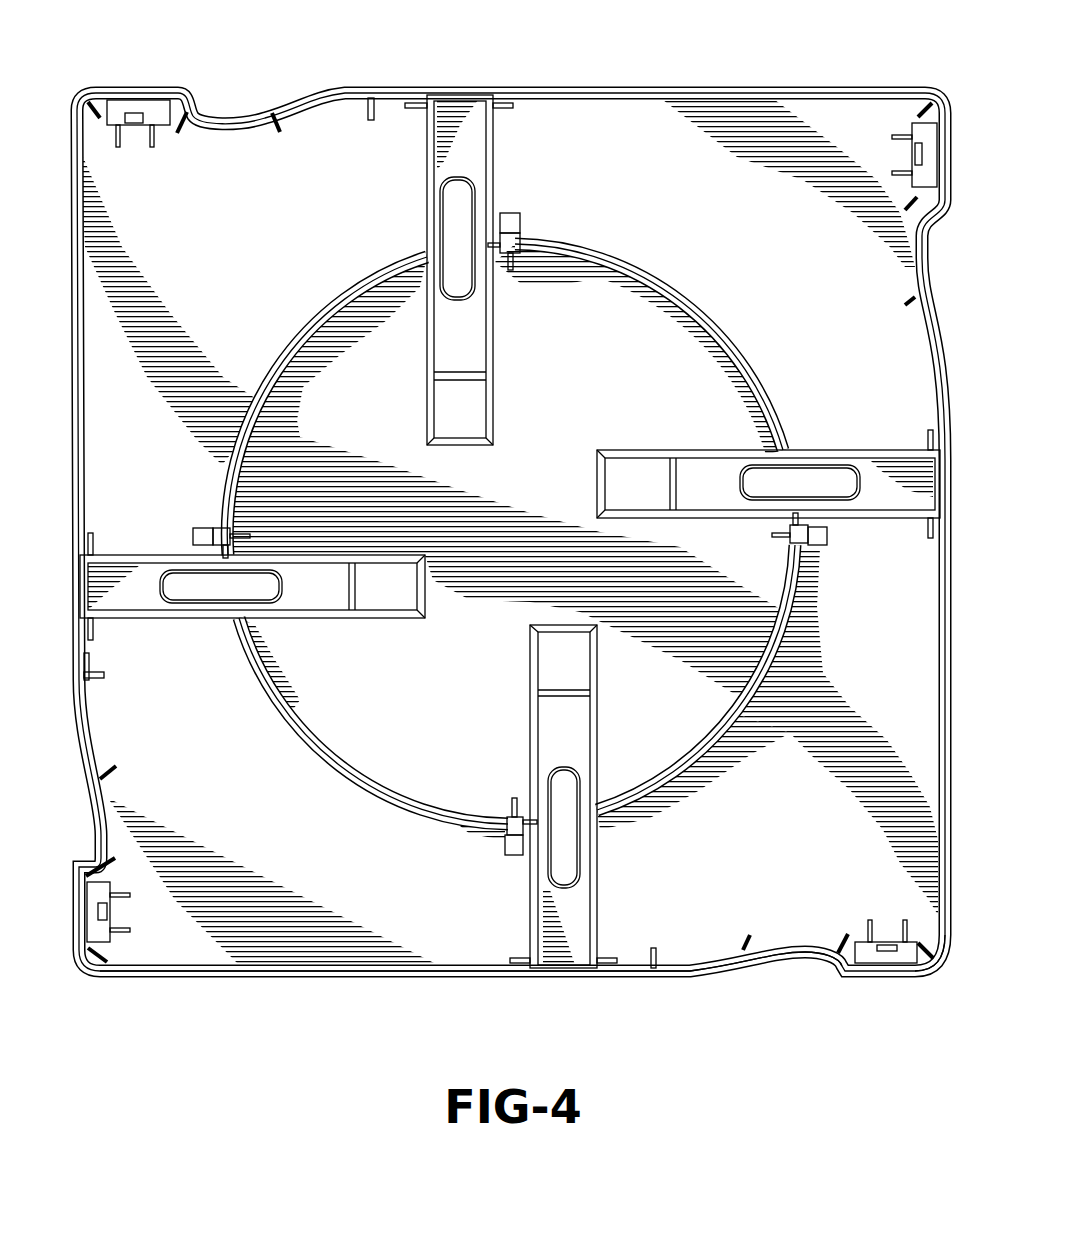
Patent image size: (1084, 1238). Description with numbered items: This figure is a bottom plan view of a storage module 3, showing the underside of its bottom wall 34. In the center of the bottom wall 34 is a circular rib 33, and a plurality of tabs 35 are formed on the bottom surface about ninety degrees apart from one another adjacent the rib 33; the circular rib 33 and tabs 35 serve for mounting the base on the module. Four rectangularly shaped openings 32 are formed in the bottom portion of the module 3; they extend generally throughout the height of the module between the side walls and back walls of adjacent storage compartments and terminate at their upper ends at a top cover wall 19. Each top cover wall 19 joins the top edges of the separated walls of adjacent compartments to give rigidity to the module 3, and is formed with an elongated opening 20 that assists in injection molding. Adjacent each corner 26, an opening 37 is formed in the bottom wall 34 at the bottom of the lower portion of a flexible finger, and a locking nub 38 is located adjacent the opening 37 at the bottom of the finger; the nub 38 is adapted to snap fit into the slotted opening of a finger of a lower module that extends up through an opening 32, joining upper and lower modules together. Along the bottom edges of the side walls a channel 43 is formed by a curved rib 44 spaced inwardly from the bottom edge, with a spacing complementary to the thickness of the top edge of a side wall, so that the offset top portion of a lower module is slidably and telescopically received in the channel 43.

The module 3 is at (641, 66).
The top cover wall 19 is at (565, 796).
The elongated opening 20 is at (568, 872).
The corner 26 is at (944, 968).
The rectangularly shaped opening 32 is at (130, 598).
The circular rib 33 is at (718, 735).
The bottom wall 34 is at (424, 934).
The tab 35 is at (513, 242).
The opening 37 is at (885, 959).
The locking nub 38 is at (888, 945).
The channel 43 is at (714, 965).
The curved rib 44 is at (802, 942).